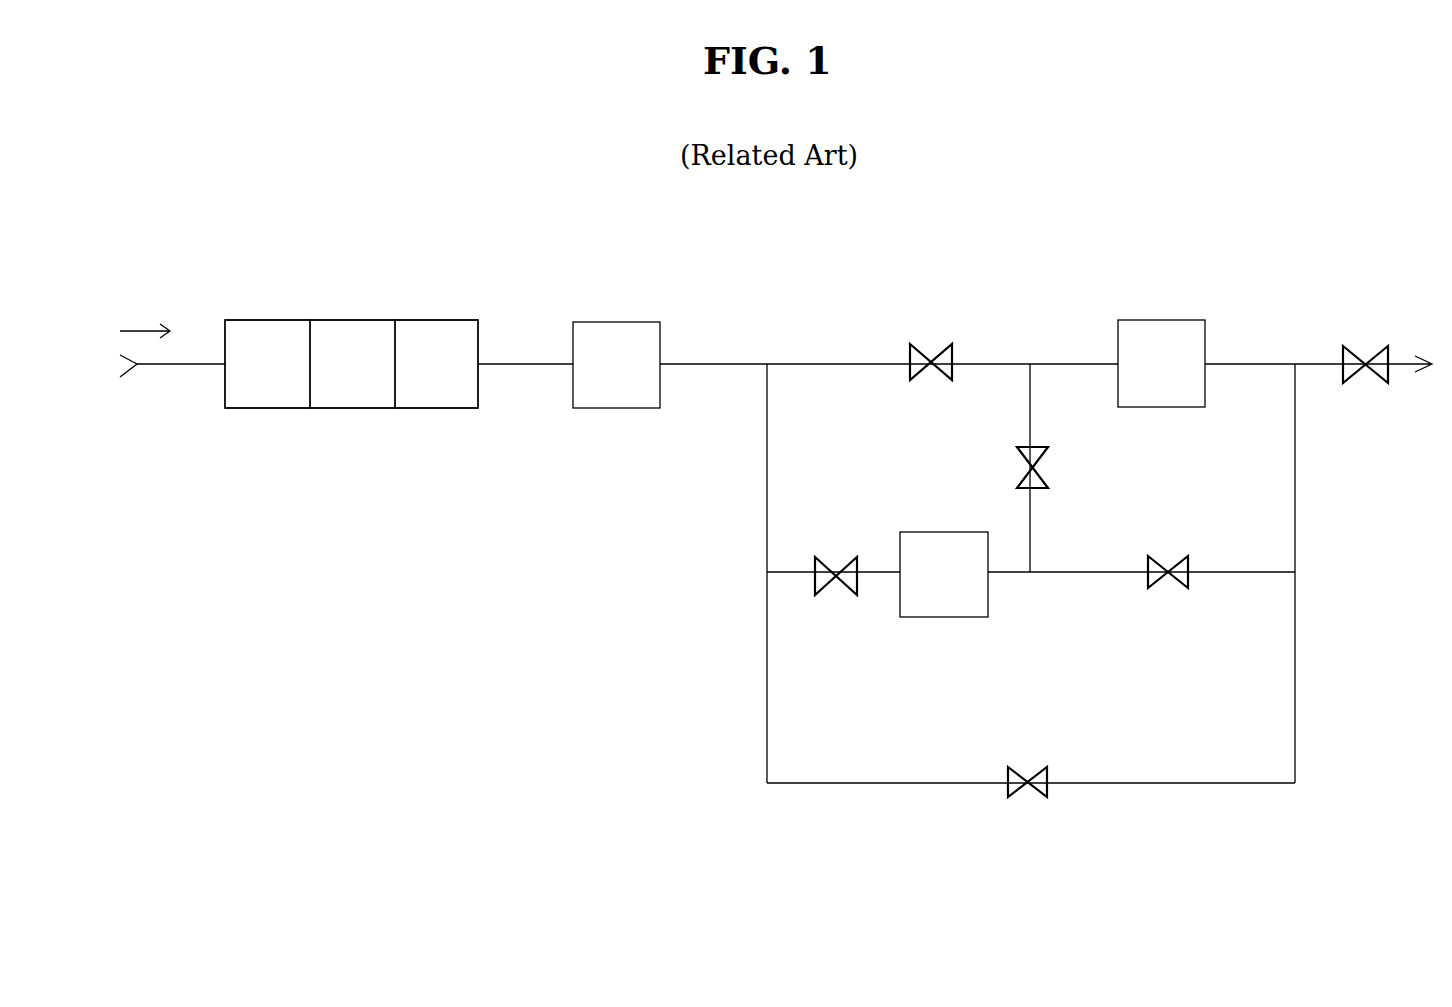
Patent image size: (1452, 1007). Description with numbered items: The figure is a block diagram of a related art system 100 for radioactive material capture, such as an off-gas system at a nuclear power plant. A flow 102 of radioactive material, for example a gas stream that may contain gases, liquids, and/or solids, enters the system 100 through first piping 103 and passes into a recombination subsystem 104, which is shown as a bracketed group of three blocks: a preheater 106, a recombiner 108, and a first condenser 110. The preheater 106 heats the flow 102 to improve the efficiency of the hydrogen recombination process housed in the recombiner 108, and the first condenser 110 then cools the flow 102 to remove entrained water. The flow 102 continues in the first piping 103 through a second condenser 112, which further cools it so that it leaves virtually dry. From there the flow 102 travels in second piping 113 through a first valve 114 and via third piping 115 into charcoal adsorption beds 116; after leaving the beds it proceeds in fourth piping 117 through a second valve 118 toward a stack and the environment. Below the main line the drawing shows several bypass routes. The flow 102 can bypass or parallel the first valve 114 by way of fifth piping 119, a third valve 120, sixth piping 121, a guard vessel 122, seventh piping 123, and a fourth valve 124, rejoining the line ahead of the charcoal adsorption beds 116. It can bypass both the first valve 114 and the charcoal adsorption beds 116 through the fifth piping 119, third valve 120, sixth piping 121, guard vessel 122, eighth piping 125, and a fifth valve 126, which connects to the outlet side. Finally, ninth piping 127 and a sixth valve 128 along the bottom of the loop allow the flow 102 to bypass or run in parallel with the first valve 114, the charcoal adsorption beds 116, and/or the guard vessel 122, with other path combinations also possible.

The system 100 is at (444, 677).
The flow 102 is at (141, 319).
The first piping 103 is at (443, 401).
The recombination subsystem 104 is at (351, 393).
The preheater 106 is at (267, 348).
The recombiner 108 is at (352, 347).
The first condenser 110 is at (436, 347).
The second condenser 112 is at (616, 349).
The second piping 113 is at (898, 404).
The first valve 114 is at (936, 343).
The third piping 115 is at (1074, 394).
The charcoal adsorption beds 116 is at (1161, 347).
The fourth piping 117 is at (1318, 391).
The second valve 118 is at (1371, 345).
The fifth piping 119 is at (737, 573).
The third valve 120 is at (842, 558).
The sixth piping 121 is at (833, 607).
The guard vessel 122 is at (944, 557).
The seventh piping 123 is at (1068, 468).
The fourth valve 124 is at (1055, 471).
The eighth piping 125 is at (1141, 603).
The fifth valve 126 is at (1174, 557).
The ninth piping 127 is at (1031, 818).
The sixth valve 128 is at (1034, 765).